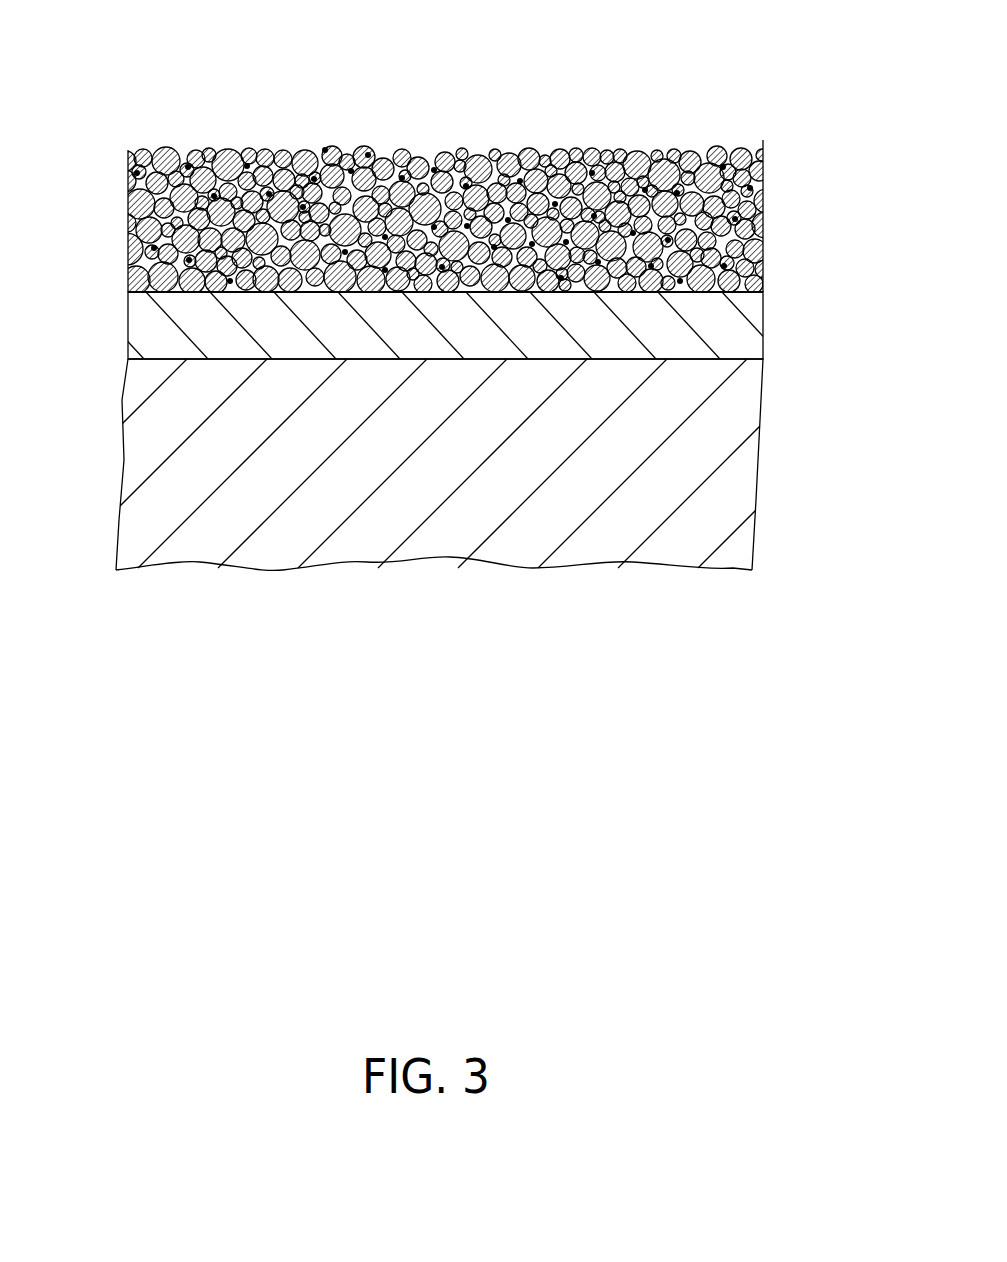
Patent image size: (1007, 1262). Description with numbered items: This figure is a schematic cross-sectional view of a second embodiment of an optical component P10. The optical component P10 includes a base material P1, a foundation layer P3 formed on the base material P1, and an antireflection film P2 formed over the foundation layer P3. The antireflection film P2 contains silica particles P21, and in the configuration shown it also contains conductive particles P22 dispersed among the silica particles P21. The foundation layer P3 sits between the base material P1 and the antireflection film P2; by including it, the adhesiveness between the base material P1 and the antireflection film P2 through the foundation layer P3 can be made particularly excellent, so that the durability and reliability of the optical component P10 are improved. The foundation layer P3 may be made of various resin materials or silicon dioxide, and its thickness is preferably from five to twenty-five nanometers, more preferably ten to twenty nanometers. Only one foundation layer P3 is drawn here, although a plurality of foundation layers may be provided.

The optical component P10 is at (614, 97).
The base material P1 is at (740, 473).
The antireflection film P2 is at (776, 135).
The foundation layer P3 is at (740, 325).
The silica particles P21 is at (127, 181).
The conductive particles P22 is at (368, 153).